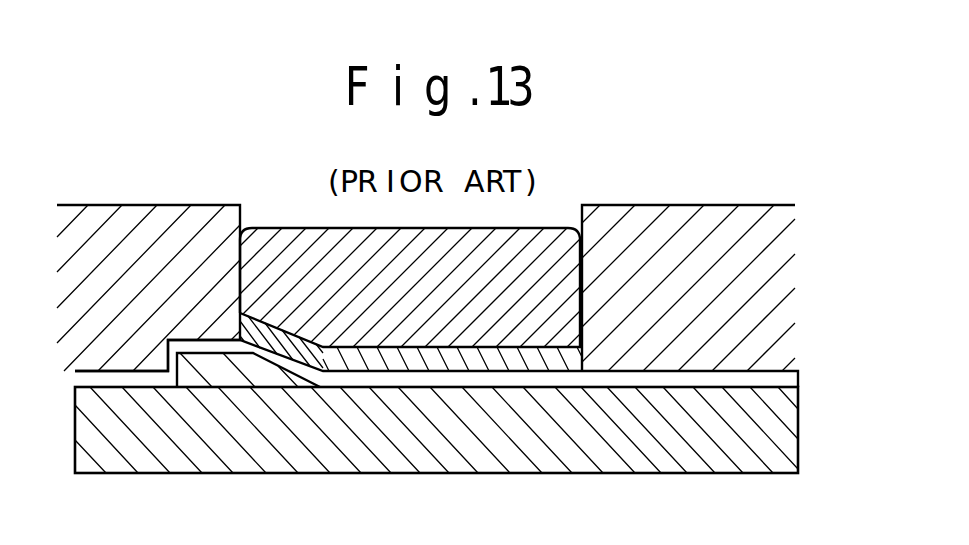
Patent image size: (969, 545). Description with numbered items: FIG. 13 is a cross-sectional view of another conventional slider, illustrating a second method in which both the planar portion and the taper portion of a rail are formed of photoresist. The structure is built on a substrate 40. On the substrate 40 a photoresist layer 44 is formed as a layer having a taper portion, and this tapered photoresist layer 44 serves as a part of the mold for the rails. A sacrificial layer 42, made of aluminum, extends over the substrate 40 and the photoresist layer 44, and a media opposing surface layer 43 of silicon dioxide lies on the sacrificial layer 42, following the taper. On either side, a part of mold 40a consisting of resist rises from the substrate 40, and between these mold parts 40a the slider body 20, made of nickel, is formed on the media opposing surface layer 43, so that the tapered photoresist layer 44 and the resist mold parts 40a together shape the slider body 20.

The slider body 20 is at (574, 253).
The substrate 40 is at (787, 417).
The part of mold consisting of resist 40a is at (230, 214).
The sacrificial layer 42 is at (747, 380).
The media opposing surface layer 43 is at (582, 361).
The photoresist layer 44 is at (208, 362).